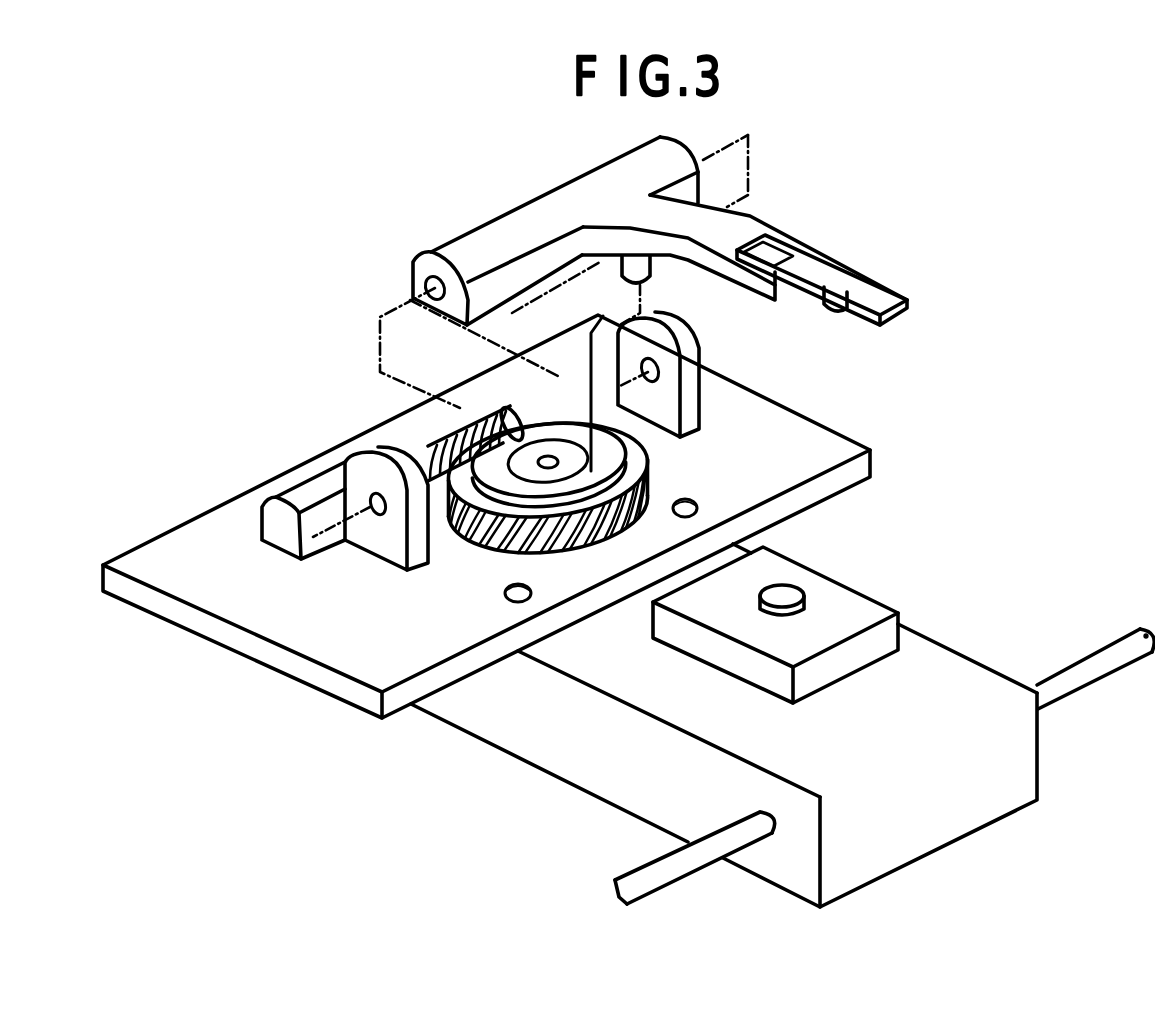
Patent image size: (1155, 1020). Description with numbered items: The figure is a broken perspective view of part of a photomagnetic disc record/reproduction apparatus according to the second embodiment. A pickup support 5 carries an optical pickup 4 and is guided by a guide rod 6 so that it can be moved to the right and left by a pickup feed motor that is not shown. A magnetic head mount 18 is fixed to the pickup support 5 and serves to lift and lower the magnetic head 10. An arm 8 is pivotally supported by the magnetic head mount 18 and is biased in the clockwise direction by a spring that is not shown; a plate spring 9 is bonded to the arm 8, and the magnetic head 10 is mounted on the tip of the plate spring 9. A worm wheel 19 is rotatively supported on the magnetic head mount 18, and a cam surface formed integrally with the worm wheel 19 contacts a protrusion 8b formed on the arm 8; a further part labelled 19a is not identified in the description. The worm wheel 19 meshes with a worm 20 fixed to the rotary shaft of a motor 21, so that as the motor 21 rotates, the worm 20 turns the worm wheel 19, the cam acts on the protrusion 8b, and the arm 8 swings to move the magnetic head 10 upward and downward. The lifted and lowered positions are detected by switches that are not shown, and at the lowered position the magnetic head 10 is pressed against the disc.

The optical pickup 4 is at (798, 590).
The pickup support 5 is at (964, 652).
The guide rod 6 is at (1090, 652).
The arm 8 is at (743, 228).
The protrusion 8b is at (653, 270).
The plate spring 9 is at (848, 272).
The magnetic head 10 is at (847, 312).
The magnetic head mount 18 is at (852, 434).
The worm wheel 19 is at (640, 470).
The shaft bracket 19a is at (636, 434).
The worm 20 is at (440, 430).
The motor 21 is at (312, 486).